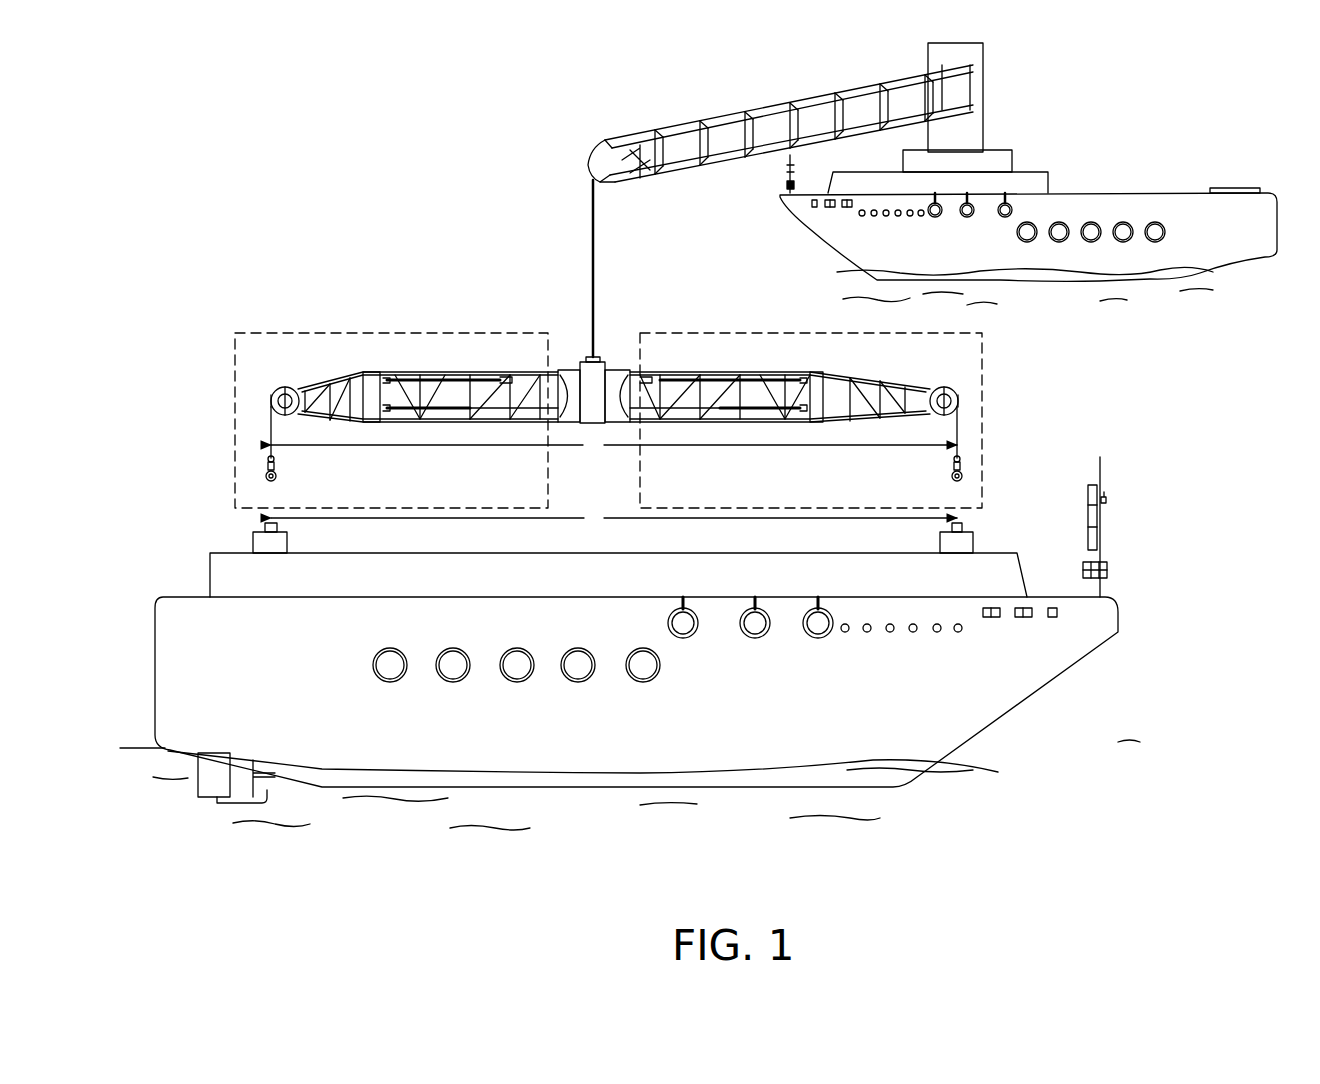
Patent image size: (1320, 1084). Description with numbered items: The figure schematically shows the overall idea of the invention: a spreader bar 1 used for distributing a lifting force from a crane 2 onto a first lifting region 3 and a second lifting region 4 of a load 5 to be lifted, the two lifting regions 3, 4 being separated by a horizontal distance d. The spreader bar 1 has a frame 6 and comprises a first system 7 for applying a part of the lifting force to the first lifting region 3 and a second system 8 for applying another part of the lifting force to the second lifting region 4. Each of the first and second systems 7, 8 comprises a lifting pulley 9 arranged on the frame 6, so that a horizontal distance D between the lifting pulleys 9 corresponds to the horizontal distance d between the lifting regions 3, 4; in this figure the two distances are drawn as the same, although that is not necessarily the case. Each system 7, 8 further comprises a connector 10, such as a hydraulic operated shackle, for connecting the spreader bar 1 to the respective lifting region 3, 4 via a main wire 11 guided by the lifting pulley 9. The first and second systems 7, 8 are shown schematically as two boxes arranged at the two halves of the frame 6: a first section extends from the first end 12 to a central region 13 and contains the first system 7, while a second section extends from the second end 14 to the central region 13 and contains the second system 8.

The spreader bar 1 is at (456, 284).
The crane 2 is at (722, 120).
The first lifting region 3 is at (263, 575).
The second lifting region 4 is at (964, 575).
The load 5 is at (750, 565).
The frame 6 is at (405, 370).
The first system 7 is at (270, 333).
The second system 8 is at (820, 333).
The lifting pulley 9 is at (275, 395).
The connector 10 is at (270, 480).
The main wire 11 is at (270, 425).
The first end 12 is at (264, 357).
The central region 13 is at (567, 349).
The second end 14 is at (963, 357).